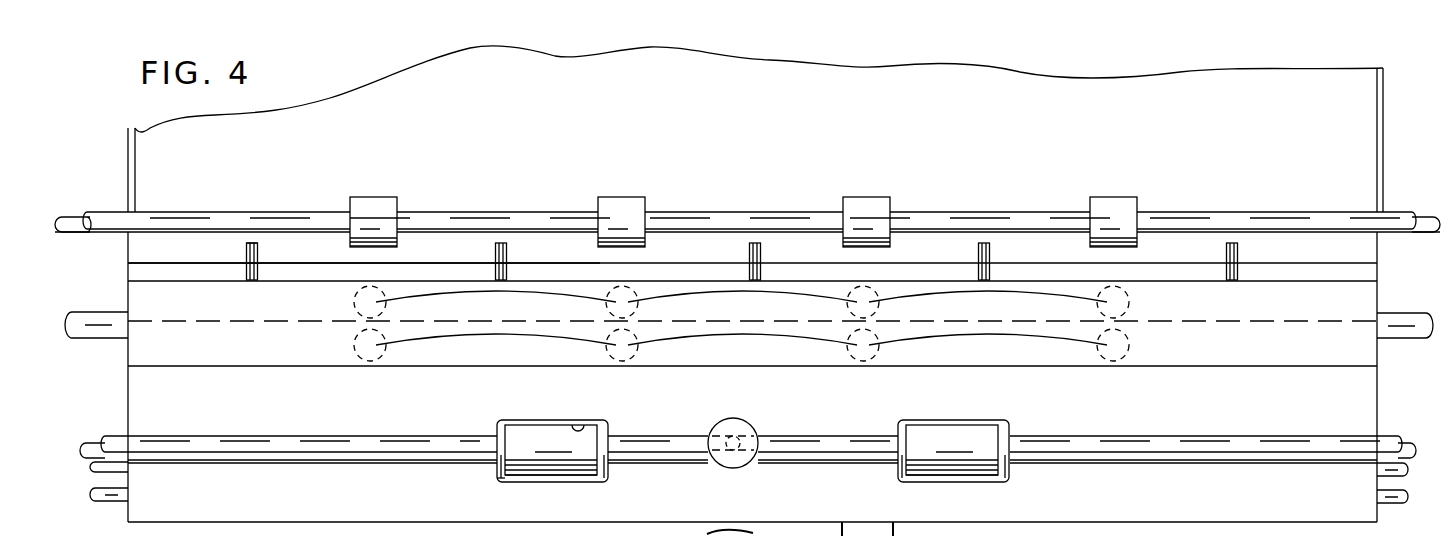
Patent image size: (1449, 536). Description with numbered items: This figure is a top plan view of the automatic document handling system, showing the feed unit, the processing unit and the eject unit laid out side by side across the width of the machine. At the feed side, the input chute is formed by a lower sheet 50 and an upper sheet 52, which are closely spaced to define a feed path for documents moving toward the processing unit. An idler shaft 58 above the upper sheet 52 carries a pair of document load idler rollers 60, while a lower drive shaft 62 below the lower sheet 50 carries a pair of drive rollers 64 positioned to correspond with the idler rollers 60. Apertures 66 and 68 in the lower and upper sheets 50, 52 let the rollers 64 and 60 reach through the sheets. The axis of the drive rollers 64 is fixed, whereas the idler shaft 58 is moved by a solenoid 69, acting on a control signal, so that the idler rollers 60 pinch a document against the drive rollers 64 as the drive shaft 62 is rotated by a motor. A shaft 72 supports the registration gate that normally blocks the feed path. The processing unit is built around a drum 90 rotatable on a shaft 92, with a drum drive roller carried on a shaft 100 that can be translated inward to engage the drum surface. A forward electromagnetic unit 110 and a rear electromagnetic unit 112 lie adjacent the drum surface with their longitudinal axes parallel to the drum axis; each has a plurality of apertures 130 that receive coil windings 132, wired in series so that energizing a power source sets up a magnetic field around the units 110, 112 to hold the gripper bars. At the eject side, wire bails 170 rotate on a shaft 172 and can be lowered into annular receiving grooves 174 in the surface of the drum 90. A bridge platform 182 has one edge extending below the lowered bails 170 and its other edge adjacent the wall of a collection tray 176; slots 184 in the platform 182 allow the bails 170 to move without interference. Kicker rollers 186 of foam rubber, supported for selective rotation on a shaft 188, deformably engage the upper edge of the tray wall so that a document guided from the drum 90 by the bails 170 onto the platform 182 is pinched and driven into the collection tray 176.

The lower sheet 50 is at (376, 501).
The upper sheet 52 is at (376, 408).
The idler shaft 58 is at (232, 440).
The document load idler rollers 60 is at (537, 432).
The lower drive shaft 62 is at (97, 449).
The drive rollers 64 is at (558, 470).
The apertures 66 is at (497, 478).
The apertures 68 is at (579, 430).
The solenoid 69 is at (745, 432).
The shaft 72 is at (112, 496).
The drum 90 is at (138, 272).
The shaft 92 is at (112, 328).
The shaft 100 is at (95, 466).
The forward electromagnetic unit 110 is at (1308, 357).
The rear electromagnetic unit 112 is at (1303, 302).
The apertures 130 is at (1128, 308).
The coil windings 132 is at (1120, 290).
The wire bails 170 is at (288, 261).
The shaft 172 is at (72, 220).
The annular receiving grooves 174 is at (258, 277).
The collection tray 176 is at (1217, 102).
The bridge platform 182 is at (177, 248).
The slots 184 is at (262, 250).
The kicker rollers 186 is at (375, 203).
The shaft 188 is at (526, 222).